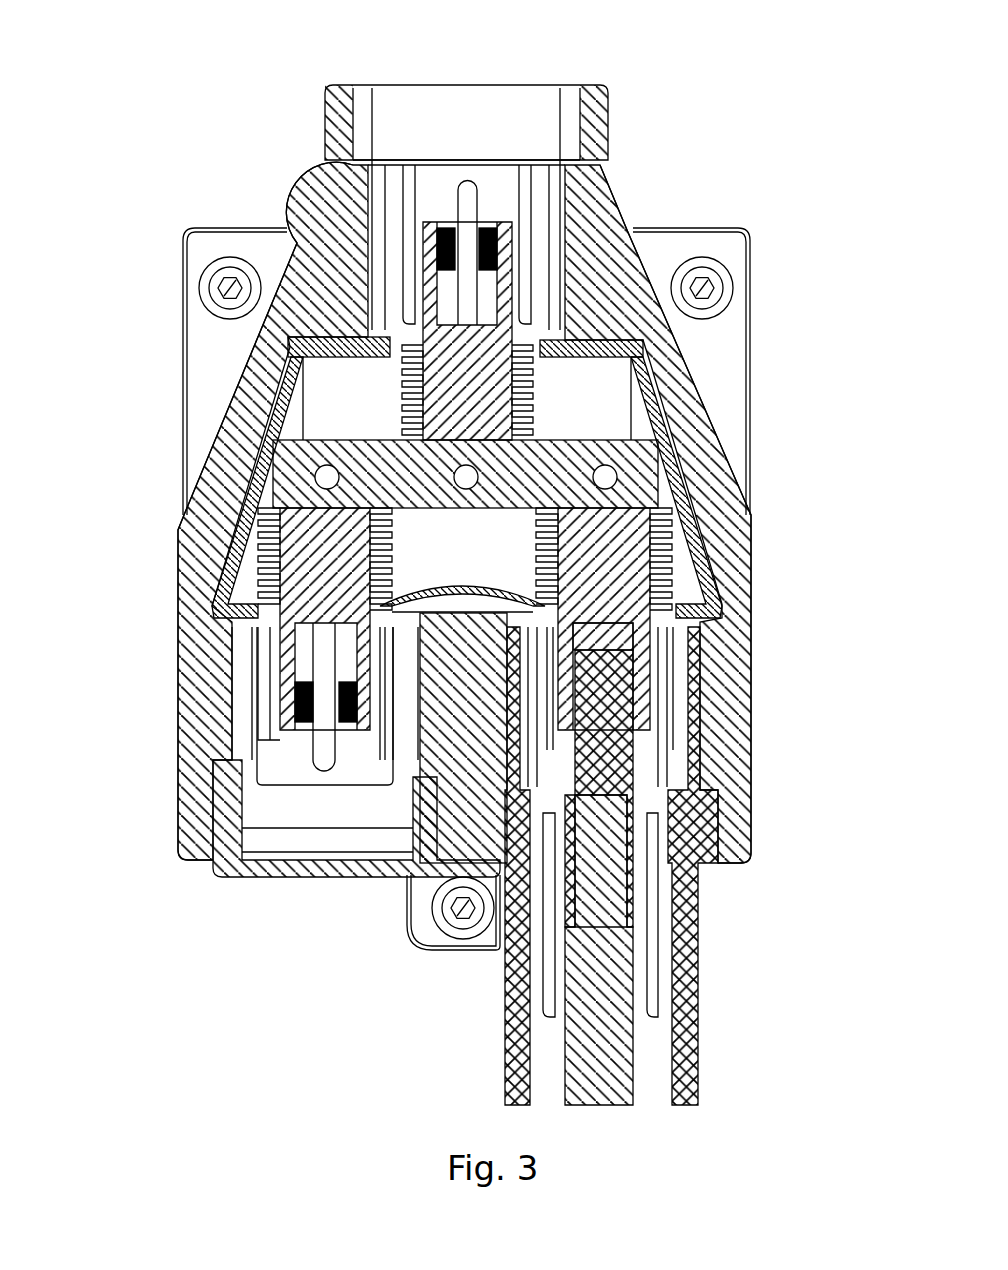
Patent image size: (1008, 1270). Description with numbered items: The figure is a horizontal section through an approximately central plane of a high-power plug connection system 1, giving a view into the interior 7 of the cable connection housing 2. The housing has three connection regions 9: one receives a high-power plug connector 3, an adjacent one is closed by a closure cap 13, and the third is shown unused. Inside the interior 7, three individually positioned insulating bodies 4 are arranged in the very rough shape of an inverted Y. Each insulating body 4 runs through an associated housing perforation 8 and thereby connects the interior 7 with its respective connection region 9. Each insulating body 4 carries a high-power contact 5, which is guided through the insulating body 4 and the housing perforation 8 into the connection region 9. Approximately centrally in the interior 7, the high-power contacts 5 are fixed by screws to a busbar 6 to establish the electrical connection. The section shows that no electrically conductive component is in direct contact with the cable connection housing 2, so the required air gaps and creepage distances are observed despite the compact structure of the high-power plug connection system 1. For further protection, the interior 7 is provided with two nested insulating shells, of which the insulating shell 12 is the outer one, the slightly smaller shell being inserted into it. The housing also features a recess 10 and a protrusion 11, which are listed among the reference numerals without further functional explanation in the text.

The high-power plug connection system 1 is at (115, 245).
The cable connection housing 2 is at (735, 640).
The high-power plug connector 3 is at (700, 923).
The insulating body 4 is at (545, 556).
The high-power contact 5 is at (472, 401).
The busbar 6 is at (414, 487).
The interior 7 is at (355, 421).
The housing perforation 8 is at (540, 365).
The connection region 9 is at (523, 70).
The recess 10 is at (212, 326).
The protrusion 11 is at (233, 250).
The insulating shell 12 is at (213, 545).
The closure cap 13 is at (303, 877).